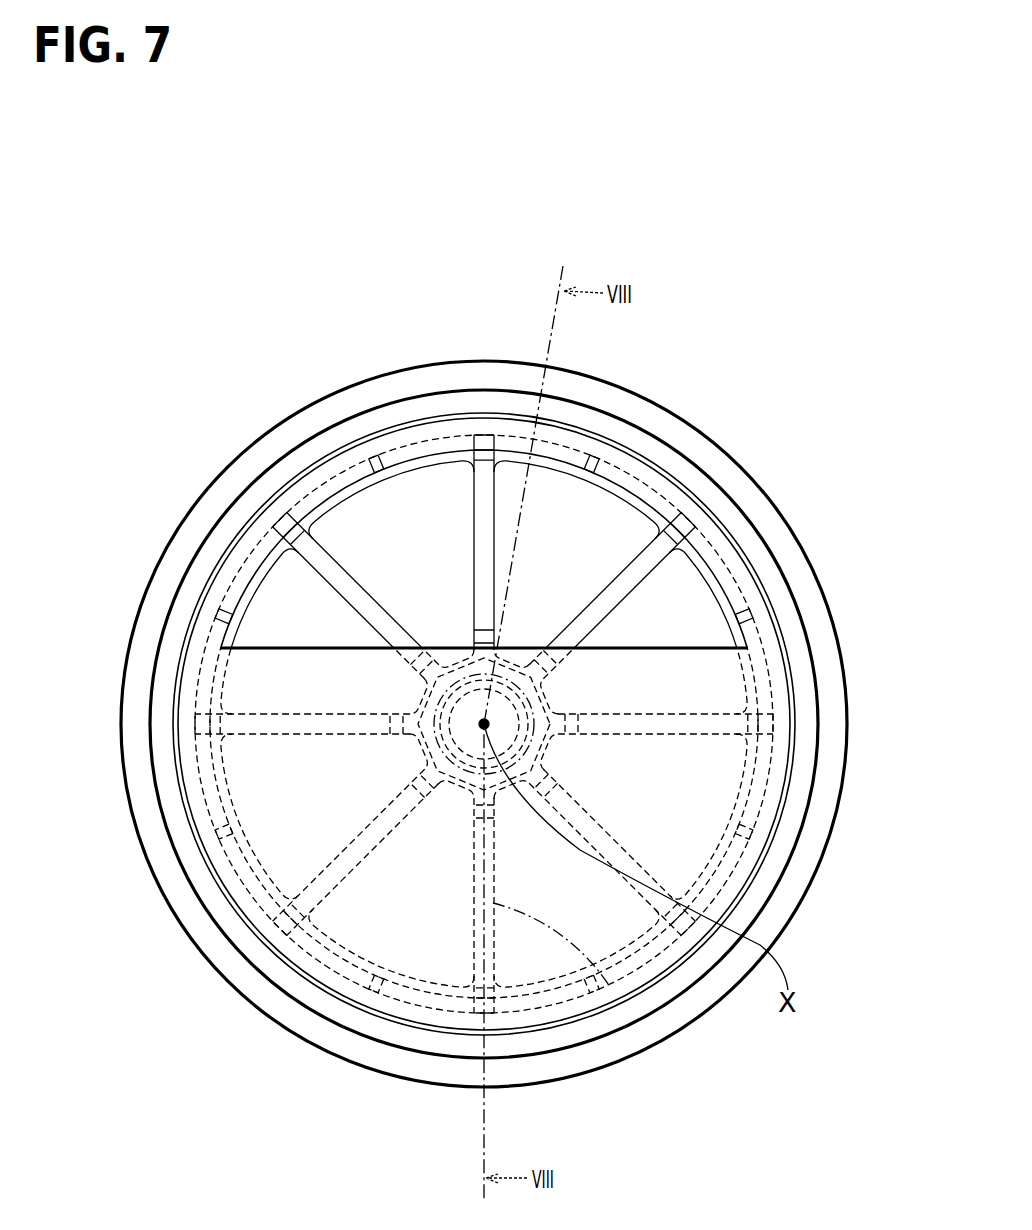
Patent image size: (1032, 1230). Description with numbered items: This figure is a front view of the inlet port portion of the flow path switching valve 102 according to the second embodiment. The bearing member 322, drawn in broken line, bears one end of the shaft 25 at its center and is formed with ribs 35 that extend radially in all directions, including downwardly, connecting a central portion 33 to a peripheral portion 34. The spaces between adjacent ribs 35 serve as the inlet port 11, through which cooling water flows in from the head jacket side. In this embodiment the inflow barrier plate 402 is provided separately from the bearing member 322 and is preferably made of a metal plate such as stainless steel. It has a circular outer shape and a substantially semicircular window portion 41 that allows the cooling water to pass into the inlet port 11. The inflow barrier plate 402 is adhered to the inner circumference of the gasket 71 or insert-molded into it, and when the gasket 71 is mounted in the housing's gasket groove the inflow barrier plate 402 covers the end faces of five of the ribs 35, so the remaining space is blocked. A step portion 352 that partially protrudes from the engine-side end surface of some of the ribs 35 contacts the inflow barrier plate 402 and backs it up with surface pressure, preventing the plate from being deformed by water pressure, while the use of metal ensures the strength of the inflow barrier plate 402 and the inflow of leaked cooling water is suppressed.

The flow path switching valve 102 is at (765, 375).
The gasket 71 is at (648, 376).
The peripheral portion 34 is at (355, 463).
The bearing member 322 is at (287, 520).
The inlet port 11 is at (288, 617).
The ribs 35 is at (472, 537).
The central portion 33 is at (457, 652).
The shaft 25 is at (504, 698).
The window portion 41 is at (705, 548).
The inflow barrier plate 402 is at (693, 780).
The step portion 352 is at (610, 987).